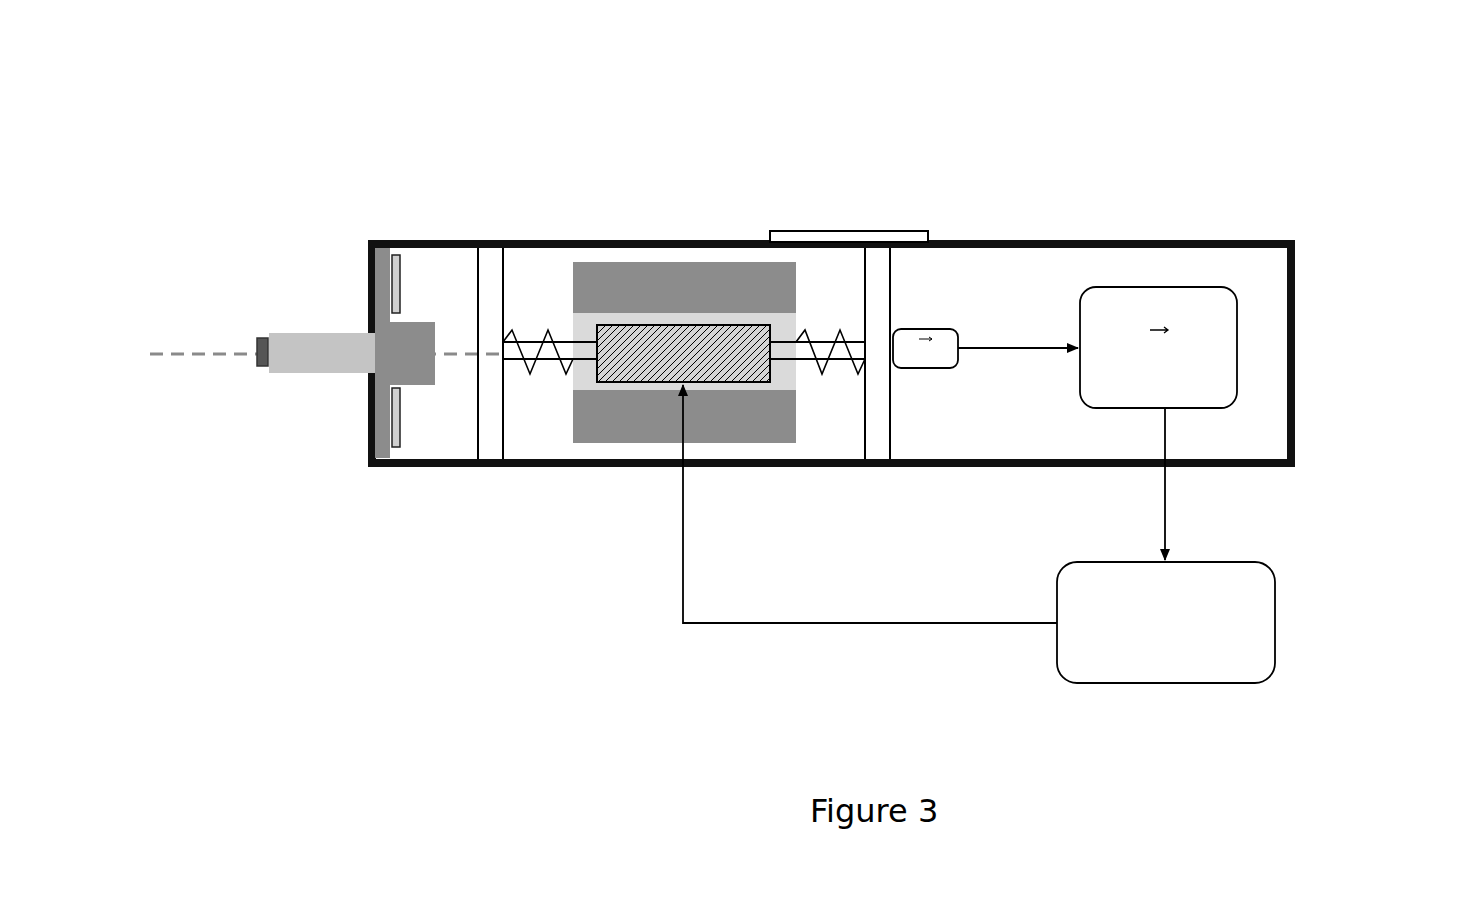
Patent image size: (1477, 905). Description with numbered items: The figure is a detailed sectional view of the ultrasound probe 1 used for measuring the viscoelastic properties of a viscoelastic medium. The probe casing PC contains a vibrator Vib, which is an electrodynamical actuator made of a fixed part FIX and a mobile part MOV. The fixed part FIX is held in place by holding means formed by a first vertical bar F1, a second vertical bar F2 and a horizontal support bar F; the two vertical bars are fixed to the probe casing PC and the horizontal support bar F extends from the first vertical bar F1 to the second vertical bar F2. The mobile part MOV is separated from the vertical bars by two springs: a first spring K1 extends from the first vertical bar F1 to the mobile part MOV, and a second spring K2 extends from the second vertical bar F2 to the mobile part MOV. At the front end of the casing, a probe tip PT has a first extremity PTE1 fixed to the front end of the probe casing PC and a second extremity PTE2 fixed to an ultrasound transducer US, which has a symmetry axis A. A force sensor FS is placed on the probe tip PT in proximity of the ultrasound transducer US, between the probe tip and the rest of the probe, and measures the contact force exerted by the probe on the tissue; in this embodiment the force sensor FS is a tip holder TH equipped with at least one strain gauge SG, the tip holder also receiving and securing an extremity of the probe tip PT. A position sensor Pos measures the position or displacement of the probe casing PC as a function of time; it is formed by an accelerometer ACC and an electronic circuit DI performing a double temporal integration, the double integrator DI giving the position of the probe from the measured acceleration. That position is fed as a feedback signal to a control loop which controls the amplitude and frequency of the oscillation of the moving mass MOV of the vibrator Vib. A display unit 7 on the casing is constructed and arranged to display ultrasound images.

The ultrasound probe 1 is at (450, 183).
The display unit 7 is at (850, 229).
The ultrasound transducer US is at (227, 338).
The symmetry axis A is at (183, 343).
The second extremity PTE2 is at (274, 353).
The first extremity PTE1 is at (374, 353).
The probe tip PT is at (335, 388).
The tip holder TH is at (386, 449).
The strain gauge SG is at (403, 290).
The force sensor FS is at (438, 446).
The first vertical bar F1 is at (497, 428).
The second vertical bar F2 is at (878, 407).
The horizontal support bar F is at (585, 368).
The first spring K1 is at (538, 339).
The second spring K2 is at (830, 339).
The mobile part MOV is at (607, 286).
The fixed part FIX is at (707, 341).
The vibrator Vib is at (684, 278).
The accelerometer ACC is at (927, 318).
The double integrator DI is at (1157, 285).
The position sensor Pos is at (1108, 249).
The probe casing PC is at (1298, 302).